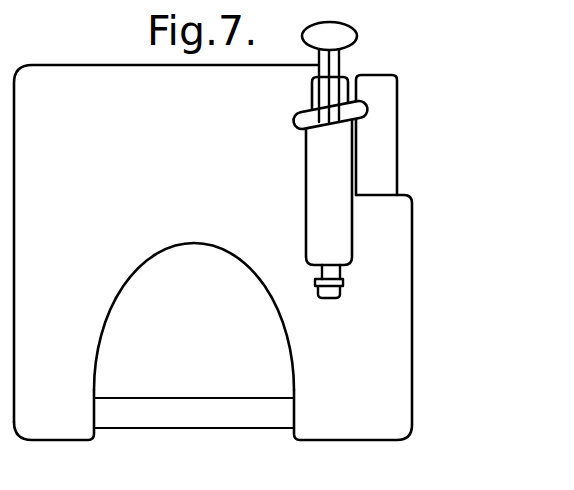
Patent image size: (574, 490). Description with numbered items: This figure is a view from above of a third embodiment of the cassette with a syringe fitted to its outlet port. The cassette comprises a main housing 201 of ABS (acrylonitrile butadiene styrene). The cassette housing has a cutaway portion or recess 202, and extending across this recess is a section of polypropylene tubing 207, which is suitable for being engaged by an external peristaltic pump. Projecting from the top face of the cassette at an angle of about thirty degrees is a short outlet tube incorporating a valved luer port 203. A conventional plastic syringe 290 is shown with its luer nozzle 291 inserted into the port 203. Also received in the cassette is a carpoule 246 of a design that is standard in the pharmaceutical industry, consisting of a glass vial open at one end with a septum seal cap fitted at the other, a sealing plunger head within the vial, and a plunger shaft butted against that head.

The main housing 201 is at (399, 222).
The recess 202 is at (218, 345).
The valved luer port 203 is at (343, 283).
The polypropylene tubing 207 is at (247, 428).
The carpoule 246 is at (398, 108).
The plastic syringe 290 is at (308, 151).
The luer nozzle 291 is at (318, 278).